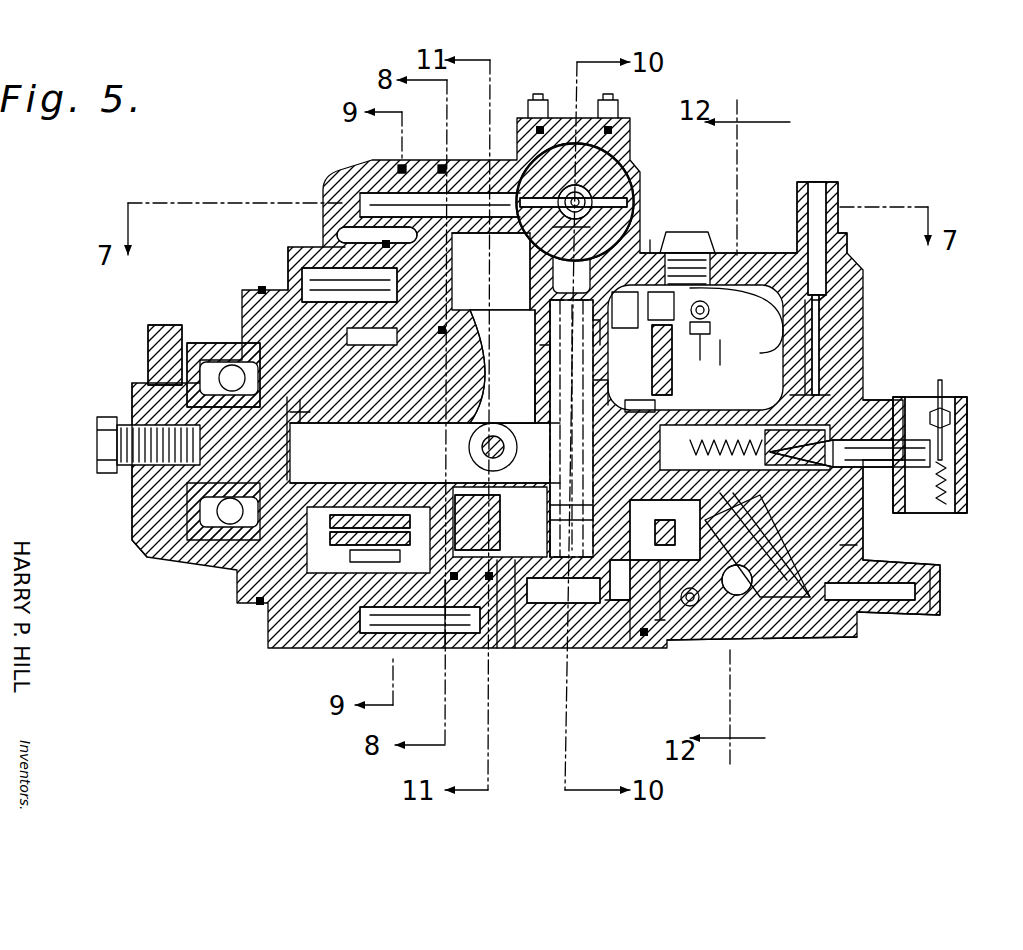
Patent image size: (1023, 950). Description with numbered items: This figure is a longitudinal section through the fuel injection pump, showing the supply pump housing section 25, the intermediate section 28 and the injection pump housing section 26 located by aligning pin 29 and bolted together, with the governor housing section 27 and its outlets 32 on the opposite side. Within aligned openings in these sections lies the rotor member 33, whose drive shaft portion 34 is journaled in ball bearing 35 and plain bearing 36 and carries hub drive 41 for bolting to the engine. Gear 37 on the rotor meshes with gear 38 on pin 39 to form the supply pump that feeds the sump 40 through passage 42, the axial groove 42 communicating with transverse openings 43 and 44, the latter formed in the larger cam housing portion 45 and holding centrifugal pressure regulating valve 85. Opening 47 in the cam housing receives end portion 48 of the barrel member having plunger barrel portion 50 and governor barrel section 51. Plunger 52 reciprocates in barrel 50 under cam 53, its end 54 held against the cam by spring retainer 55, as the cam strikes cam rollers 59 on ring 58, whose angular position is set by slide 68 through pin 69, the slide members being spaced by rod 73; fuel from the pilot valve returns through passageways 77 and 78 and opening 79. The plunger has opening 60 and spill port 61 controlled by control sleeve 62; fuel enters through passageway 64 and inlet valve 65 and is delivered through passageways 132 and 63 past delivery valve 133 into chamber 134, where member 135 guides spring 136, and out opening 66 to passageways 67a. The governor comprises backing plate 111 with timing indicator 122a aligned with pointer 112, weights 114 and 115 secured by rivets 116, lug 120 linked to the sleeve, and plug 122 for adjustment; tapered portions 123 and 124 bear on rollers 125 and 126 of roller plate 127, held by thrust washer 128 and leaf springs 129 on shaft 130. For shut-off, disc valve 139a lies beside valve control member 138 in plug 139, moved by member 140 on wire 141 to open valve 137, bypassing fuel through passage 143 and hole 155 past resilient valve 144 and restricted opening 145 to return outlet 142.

The supply pump housing section 25 is at (250, 292).
The injection pump housing section 26 is at (432, 645).
The governor housing section 27 is at (820, 640).
The intermediate section 28 is at (430, 170).
The aligning pin 29 is at (385, 628).
The outlets 32 is at (925, 607).
The rotor member 33 is at (342, 482).
The drive shaft portion 34 is at (150, 400).
The ball bearing 35 is at (212, 335).
The plain bearing 36 is at (400, 520).
The gear 37 is at (372, 562).
The gear 38 is at (380, 248).
The shaft or pin 39 is at (293, 250).
The sump 40 is at (491, 260).
The hub drive 41 is at (156, 325).
The axial groove 42 is at (425, 453).
The transverse opening 43 is at (311, 413).
The transverse opening 44 is at (470, 458).
The cam housing portion 45 is at (428, 437).
The opening 47 is at (440, 470).
The end portion 48 is at (400, 534).
The plunger barrel portion 50 is at (518, 401).
The governor barrel section 51 is at (668, 530).
The plunger 52 is at (602, 345).
The cam 53 is at (537, 320).
The plunger end 54 is at (540, 350).
The spring retainer 55 is at (520, 337).
The ring 58 is at (545, 277).
The cam rollers 59 is at (520, 640).
The opening 60 is at (539, 362).
The spill port 61 is at (605, 365).
The control sleeve 62 is at (600, 400).
The passageway 63 is at (626, 584).
The passageway 64 is at (480, 533).
The fuel inlet valve 65 is at (500, 660).
The opening 66 is at (820, 532).
The passageways 67a is at (840, 550).
The slide 68 is at (600, 188).
The pin 69 is at (588, 250).
The rod 73 is at (585, 258).
The passageway 77 is at (590, 205).
The passageway 78 is at (395, 195).
The opening 79 is at (345, 228).
The pressure regulating valve 85 is at (470, 442).
The backing plate 111 is at (660, 238).
The pointer 112 is at (664, 306).
The centrifugal weight 114 is at (625, 310).
The centrifugal weight 115 is at (615, 645).
The rivets 116 is at (663, 532).
The pin or lug 120 is at (640, 412).
The plug 122 is at (688, 235).
The timing indicator 122a is at (745, 250).
The tapered projecting portion 123 is at (702, 325).
The tapered projecting portion 124 is at (660, 630).
The roller 125 is at (706, 308).
The roller 126 is at (688, 610).
The roller plate 127 is at (715, 345).
The thrust washer 128 is at (740, 350).
The leaf springs 129 is at (768, 615).
The shaft 130 is at (735, 595).
The passageway 132 is at (600, 510).
The delivery valve 133 is at (665, 360).
The chamber 134 is at (730, 375).
The member 135 is at (745, 402).
The delivery valve spring 136 is at (725, 395).
The valve 137 is at (845, 512).
The valve control member 138 is at (866, 402).
The plug 139 is at (875, 445).
The disc valve 139a is at (840, 438).
The member 140 is at (955, 398).
The wire 141 is at (943, 375).
The return outlet 142 is at (828, 185).
The passage 143 is at (818, 330).
The resilient valve 144 is at (825, 308).
The restricted opening 145 is at (852, 265).
The hole 155 is at (800, 372).